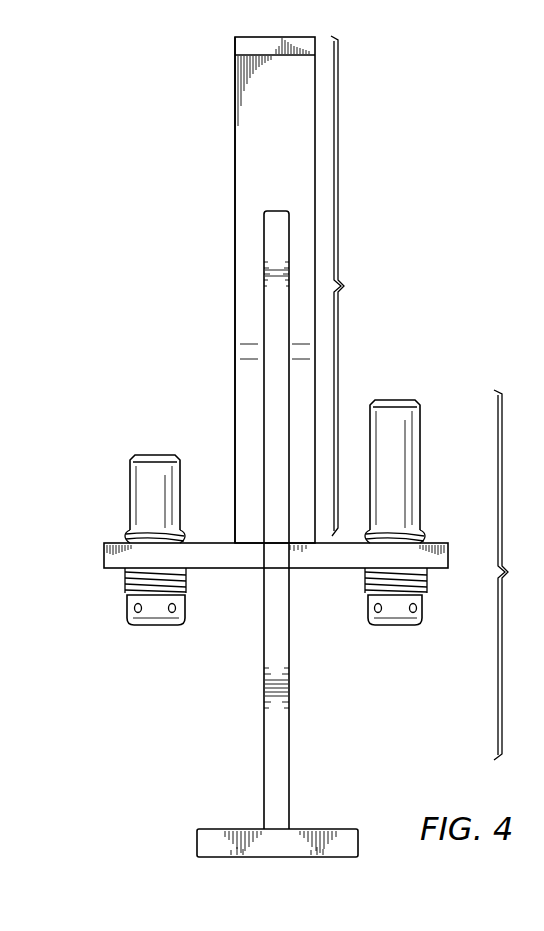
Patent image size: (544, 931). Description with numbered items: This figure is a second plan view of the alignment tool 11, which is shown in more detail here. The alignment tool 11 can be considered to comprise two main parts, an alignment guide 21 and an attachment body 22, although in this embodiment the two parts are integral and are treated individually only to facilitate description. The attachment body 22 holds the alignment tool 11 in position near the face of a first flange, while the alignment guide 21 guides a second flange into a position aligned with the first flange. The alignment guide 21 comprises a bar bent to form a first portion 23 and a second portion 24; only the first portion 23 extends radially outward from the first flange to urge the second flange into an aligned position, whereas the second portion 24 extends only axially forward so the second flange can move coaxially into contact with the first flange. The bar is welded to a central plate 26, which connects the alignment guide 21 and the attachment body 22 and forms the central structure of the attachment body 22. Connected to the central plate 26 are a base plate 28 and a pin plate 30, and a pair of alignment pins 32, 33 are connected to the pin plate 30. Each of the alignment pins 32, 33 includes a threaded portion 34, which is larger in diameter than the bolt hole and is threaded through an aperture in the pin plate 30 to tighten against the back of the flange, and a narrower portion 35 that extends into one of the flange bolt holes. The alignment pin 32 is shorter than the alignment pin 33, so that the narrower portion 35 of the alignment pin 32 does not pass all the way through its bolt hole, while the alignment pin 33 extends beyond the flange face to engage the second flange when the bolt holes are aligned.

The alignment tool 11 is at (165, 364).
The alignment guide 21 is at (356, 286).
The attachment body 22 is at (519, 575).
The first portion 23 is at (233, 157).
The second portion 24 is at (233, 414).
The central plate 26 is at (290, 647).
The base plate 28 is at (212, 828).
The pin plate 30 is at (224, 568).
The alignment pin 32 is at (115, 492).
The alignment pin 33 is at (436, 465).
The threaded portion 34 is at (125, 580).
The narrower portion 35 is at (130, 514).